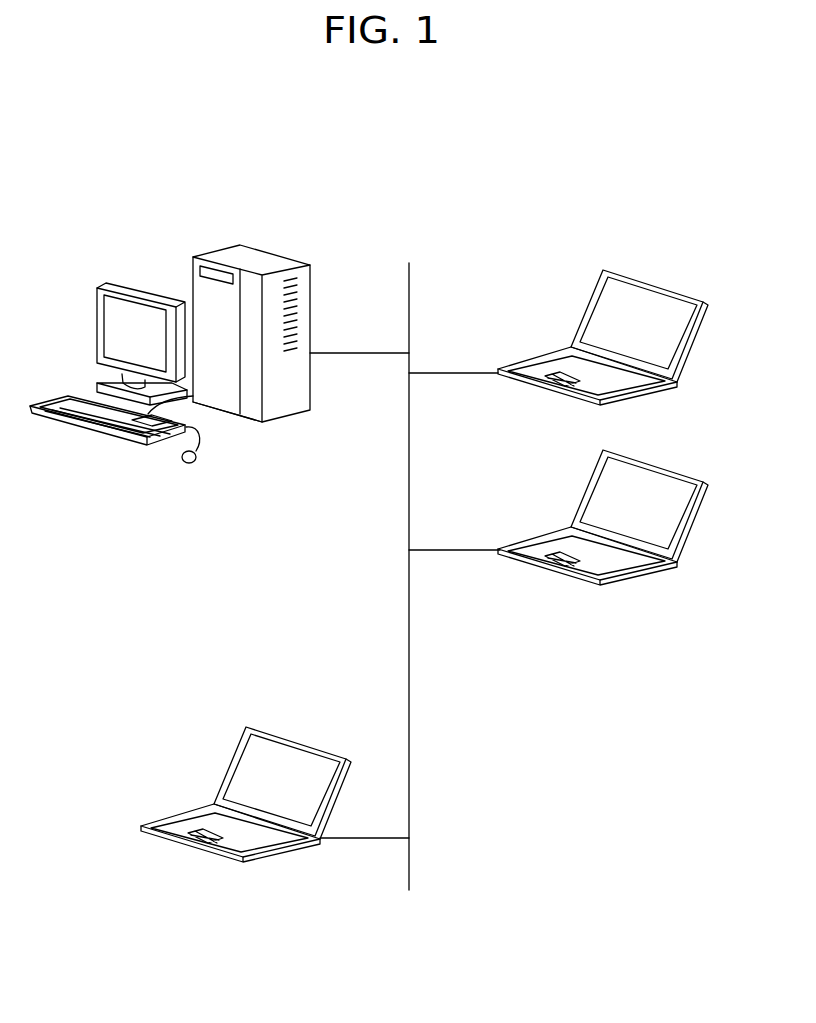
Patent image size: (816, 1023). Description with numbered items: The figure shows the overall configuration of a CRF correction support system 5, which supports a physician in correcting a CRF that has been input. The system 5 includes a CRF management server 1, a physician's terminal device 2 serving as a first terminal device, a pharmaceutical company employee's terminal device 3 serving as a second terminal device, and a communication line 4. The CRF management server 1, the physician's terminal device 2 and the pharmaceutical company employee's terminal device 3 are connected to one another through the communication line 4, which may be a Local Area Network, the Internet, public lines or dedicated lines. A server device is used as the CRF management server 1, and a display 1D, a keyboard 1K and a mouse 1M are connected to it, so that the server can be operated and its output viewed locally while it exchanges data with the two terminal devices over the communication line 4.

The CRF management server 1 is at (250, 418).
The display 1D is at (97, 313).
The keyboard 1K is at (82, 427).
The mouse 1M is at (182, 464).
The physician's terminal device 2 is at (537, 362).
The pharmaceutical company employee's terminal device 3 is at (246, 794).
The communication line 4 is at (405, 576).
The CRF correction support system 5 is at (376, 145).